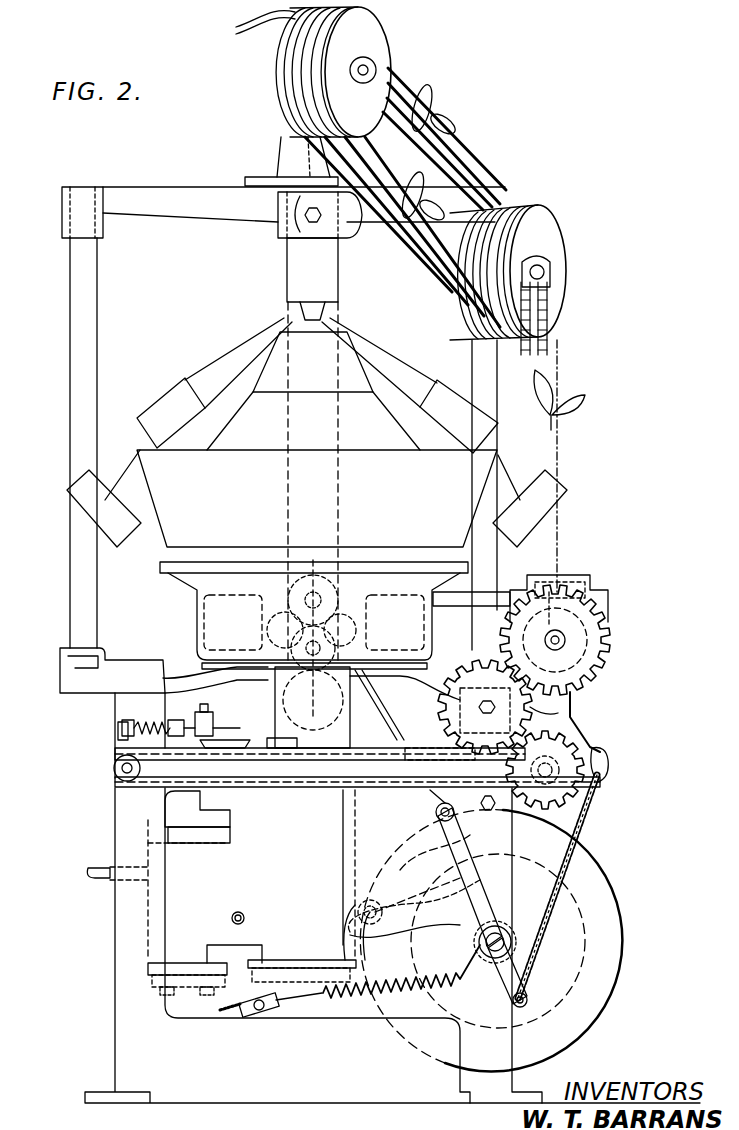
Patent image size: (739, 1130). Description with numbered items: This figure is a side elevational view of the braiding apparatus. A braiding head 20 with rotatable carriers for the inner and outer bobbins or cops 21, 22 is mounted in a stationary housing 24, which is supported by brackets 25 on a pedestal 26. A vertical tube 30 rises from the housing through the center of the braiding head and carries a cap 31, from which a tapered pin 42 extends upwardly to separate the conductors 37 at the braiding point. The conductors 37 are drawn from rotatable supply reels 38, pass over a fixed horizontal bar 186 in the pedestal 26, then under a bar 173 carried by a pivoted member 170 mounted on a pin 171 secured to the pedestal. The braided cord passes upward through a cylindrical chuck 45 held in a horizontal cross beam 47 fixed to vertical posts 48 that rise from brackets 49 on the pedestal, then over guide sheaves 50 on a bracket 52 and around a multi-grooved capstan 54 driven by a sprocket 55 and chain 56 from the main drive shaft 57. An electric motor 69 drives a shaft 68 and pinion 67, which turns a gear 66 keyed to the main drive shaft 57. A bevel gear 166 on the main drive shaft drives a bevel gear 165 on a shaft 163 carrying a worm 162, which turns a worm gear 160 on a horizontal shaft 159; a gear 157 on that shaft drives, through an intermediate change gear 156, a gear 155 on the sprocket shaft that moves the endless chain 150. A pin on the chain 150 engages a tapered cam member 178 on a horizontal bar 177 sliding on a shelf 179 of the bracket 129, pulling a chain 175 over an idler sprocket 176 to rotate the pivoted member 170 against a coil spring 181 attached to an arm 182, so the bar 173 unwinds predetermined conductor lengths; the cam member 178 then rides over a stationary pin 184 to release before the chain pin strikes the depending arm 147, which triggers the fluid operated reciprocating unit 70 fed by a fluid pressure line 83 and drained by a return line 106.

The guide sheaves 50 is at (245, 26).
The bracket 52 is at (282, 130).
The horizontal cross beam 47 is at (220, 195).
The vertical posts 48 is at (98, 266).
The cylindrical chuck 45 is at (277, 266).
The tapered pin 42 is at (325, 314).
The cap 31 is at (288, 324).
The vertical tube 30 is at (288, 460).
The braiding head 20 is at (432, 472).
The inner bobbins or cops 21 is at (205, 394).
The outer bobbins or cops 22 is at (100, 470).
The stationary housing 24 is at (210, 599).
The shaft 68 is at (233, 622).
The pinion 67 is at (397, 622).
The main drive shaft 57 is at (322, 594).
The bevel gear 166 is at (317, 562).
The gear 66 is at (282, 607).
The bevel gear 165 is at (345, 602).
The multi-grooved capstan 54 is at (548, 230).
The sprocket 55 is at (548, 274).
The chain 56 is at (552, 318).
The shaft 163 is at (455, 600).
The worm gear 160 is at (607, 640).
The horizontal shaft 159 is at (572, 642).
The worm 162 is at (566, 592).
The intermediate change gear 156 is at (465, 682).
The gear 157 is at (592, 682).
The gear 155 is at (582, 727).
The idler sprocket 176 is at (605, 767).
The chain 175 is at (572, 862).
The horizontal bar 177 is at (348, 770).
The electric motor 69 is at (337, 749).
The tapered cam member 178 is at (205, 760).
The fixed horizontal bar 186 is at (510, 783).
The bracket 129 is at (125, 784).
The arm 147 is at (118, 750).
The stationary pin 184 is at (170, 715).
The brackets 49 is at (80, 692).
The brackets 25 is at (187, 667).
The pedestal 26 is at (112, 974).
The endless chain 150 is at (260, 800).
The shelf 179 is at (259, 780).
The fluid pressure line 83 is at (97, 874).
The fluid operated reciprocating unit 70 is at (232, 901).
The return line 106 is at (232, 920).
The pin 171 is at (457, 1047).
The pivoted member 170 is at (360, 895).
The bar 173 is at (447, 827).
The conductors 37 is at (432, 802).
The arm 182 is at (372, 927).
The supply reels 38 is at (377, 1032).
The coil spring 181 is at (302, 1017).